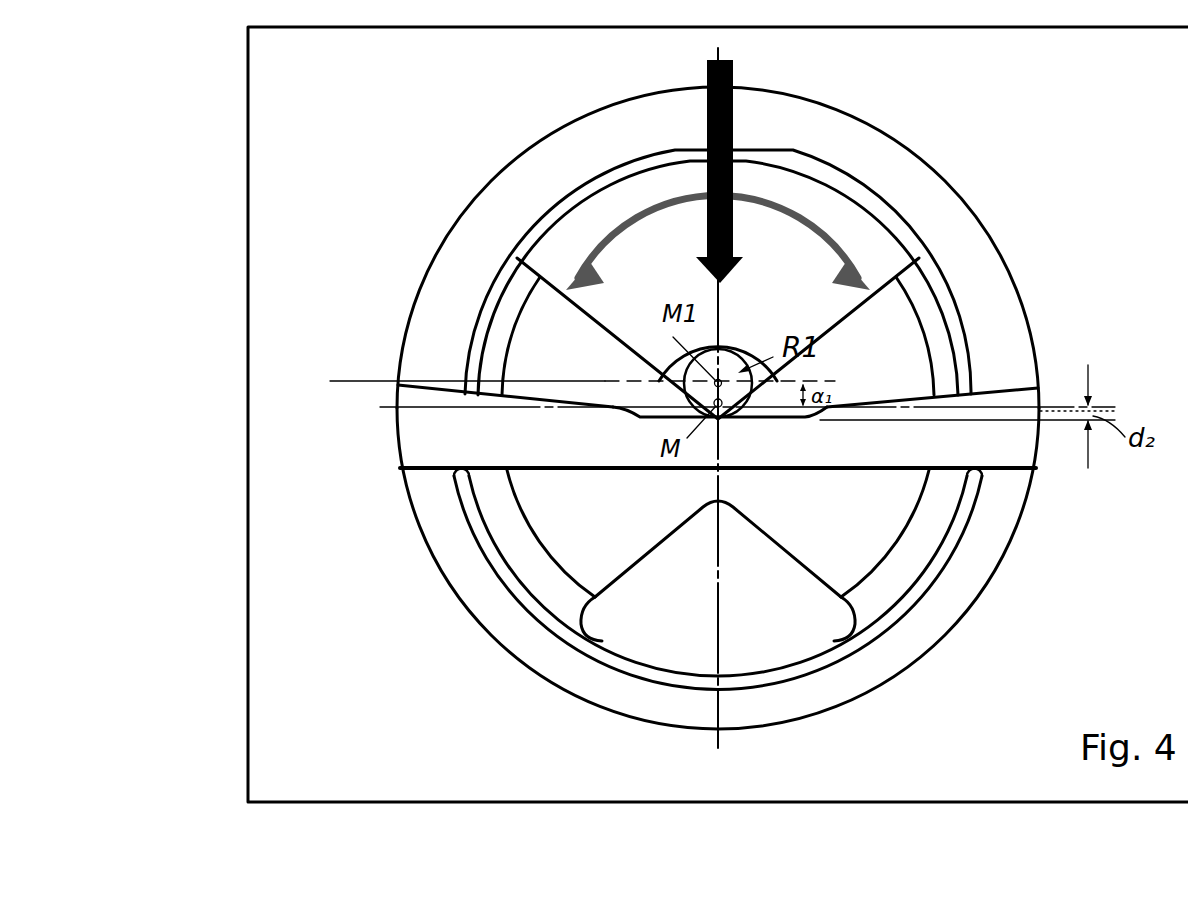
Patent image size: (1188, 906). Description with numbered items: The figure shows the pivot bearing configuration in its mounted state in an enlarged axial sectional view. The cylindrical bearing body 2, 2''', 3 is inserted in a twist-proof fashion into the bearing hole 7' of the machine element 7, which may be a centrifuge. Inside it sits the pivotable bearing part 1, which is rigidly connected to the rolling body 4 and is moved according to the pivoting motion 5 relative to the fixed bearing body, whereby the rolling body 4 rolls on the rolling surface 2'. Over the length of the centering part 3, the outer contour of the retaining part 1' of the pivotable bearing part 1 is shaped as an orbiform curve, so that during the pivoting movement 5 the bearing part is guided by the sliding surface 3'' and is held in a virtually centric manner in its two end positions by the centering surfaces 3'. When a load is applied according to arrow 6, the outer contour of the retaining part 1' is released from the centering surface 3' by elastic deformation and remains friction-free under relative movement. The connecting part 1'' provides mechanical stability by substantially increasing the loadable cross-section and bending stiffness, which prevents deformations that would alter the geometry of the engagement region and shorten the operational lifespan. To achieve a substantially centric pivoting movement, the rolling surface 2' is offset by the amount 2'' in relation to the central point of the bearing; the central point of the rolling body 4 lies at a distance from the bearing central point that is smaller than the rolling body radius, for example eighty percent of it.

The pivotable bearing part 1 is at (628, 329).
The retaining part 1' is at (625, 304).
The connecting part 1'' is at (726, 598).
The cylindrical bearing body 2 is at (655, 579).
The rolling surface 2' is at (842, 526).
The offset amount 2'' is at (982, 416).
The cylindrical bearing body portion 2''' is at (652, 447).
The centering part 3 is at (712, 247).
The centering surfaces 3' is at (714, 272).
The sliding surface 3'' is at (718, 225).
The rolling body 4 is at (563, 384).
The pivoting direction 5 is at (633, 195).
The load arrow 6 is at (735, 140).
The machine element 7 is at (687, 414).
The bearing hole 7' is at (653, 585).